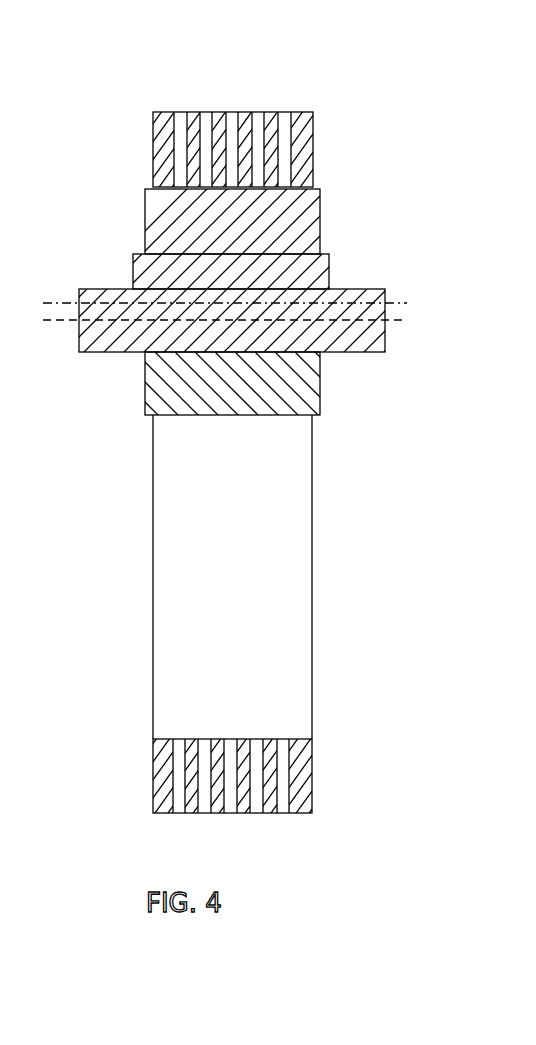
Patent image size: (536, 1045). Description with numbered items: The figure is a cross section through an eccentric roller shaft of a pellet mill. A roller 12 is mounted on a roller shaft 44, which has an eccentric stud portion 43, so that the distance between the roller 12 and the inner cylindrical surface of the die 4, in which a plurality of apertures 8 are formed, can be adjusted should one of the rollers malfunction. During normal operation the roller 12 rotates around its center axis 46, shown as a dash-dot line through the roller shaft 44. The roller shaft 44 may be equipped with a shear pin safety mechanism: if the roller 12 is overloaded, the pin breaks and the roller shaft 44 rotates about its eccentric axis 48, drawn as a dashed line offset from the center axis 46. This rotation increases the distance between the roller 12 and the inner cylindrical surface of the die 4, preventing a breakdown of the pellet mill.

The die 4 is at (300, 130).
The apertures 8 is at (232, 123).
The roller 12 is at (297, 209).
The eccentric stud portion 43 is at (330, 273).
The roller shaft 44 is at (375, 289).
The center axis 46 is at (417, 294).
The eccentric axis 48 is at (411, 327).